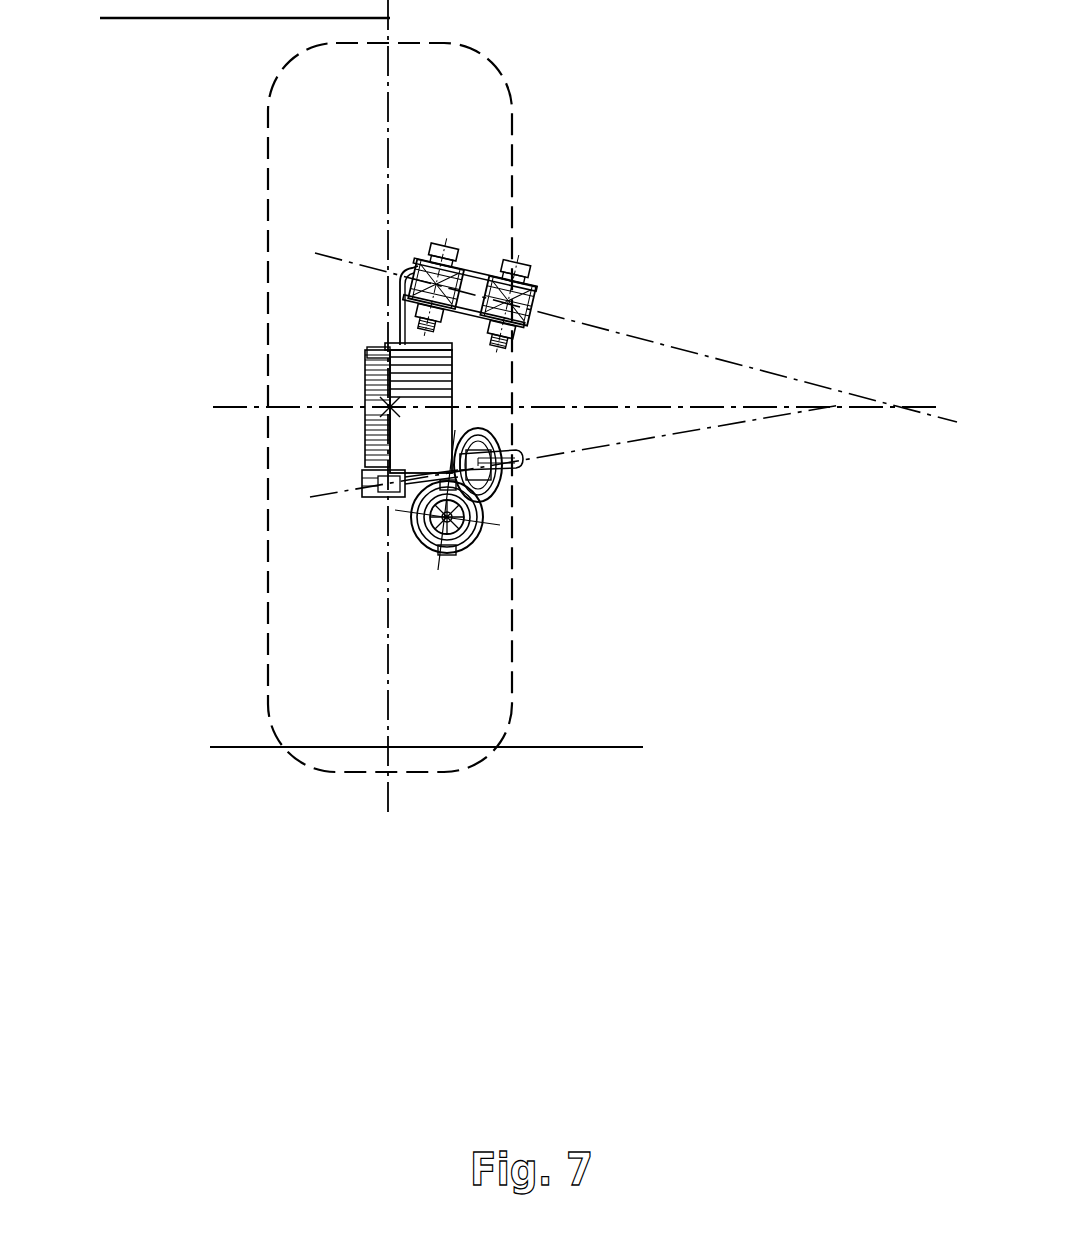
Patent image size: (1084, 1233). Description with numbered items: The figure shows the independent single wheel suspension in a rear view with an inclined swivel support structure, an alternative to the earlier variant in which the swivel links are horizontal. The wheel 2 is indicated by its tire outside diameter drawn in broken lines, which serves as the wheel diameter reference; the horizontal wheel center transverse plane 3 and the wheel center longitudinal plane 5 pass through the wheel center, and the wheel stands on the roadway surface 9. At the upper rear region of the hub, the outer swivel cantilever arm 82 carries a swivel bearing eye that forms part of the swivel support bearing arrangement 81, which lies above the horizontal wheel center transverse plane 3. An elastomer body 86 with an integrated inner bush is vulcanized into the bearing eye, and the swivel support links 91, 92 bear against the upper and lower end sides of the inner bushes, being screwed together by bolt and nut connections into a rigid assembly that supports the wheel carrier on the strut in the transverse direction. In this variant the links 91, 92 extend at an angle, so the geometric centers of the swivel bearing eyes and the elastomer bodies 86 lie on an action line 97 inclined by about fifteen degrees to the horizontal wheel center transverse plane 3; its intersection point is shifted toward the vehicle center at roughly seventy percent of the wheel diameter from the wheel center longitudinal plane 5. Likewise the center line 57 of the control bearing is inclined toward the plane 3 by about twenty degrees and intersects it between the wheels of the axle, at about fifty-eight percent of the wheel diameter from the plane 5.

The wheel 2 is at (498, 407).
The horizontal wheel center transverse plane 3 is at (228, 407).
The wheel center longitudinal plane 5 is at (229, 19).
The roadway surface 9 is at (593, 747).
The center line of the control bearing 57 is at (600, 445).
The swivel support bearing arrangement 81 is at (528, 262).
The outer swivel cantilever arm 82 is at (415, 262).
The elastomer body 86 is at (526, 300).
The swivel support link 91 is at (467, 270).
The swivel support link 92 is at (412, 341).
The action line 97 is at (633, 337).